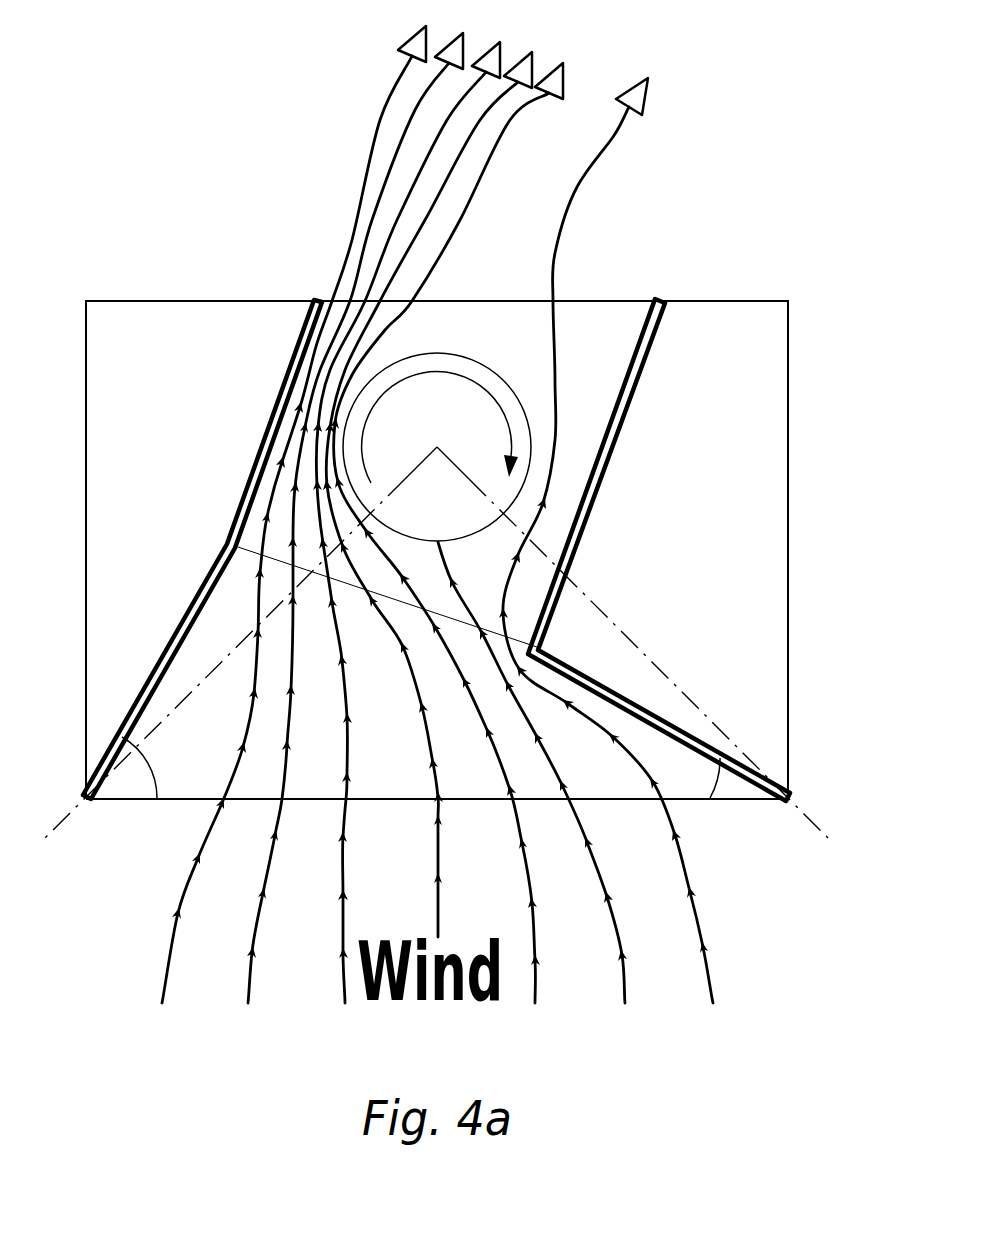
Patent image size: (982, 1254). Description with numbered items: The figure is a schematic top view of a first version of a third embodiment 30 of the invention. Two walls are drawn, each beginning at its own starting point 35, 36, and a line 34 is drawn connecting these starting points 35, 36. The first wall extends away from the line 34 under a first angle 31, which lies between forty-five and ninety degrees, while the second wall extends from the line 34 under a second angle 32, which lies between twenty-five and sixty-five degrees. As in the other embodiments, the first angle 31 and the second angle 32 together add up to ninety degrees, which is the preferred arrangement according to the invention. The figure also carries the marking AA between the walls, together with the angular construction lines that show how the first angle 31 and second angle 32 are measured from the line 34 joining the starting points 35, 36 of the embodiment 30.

The third embodiment 30 is at (116, 922).
The first angle 31 is at (155, 776).
The second angle 32 is at (713, 788).
The line connecting starting points 34 is at (388, 802).
The starting point 35 is at (88, 803).
The starting point 36 is at (792, 803).
The rotor axis AA is at (437, 372).